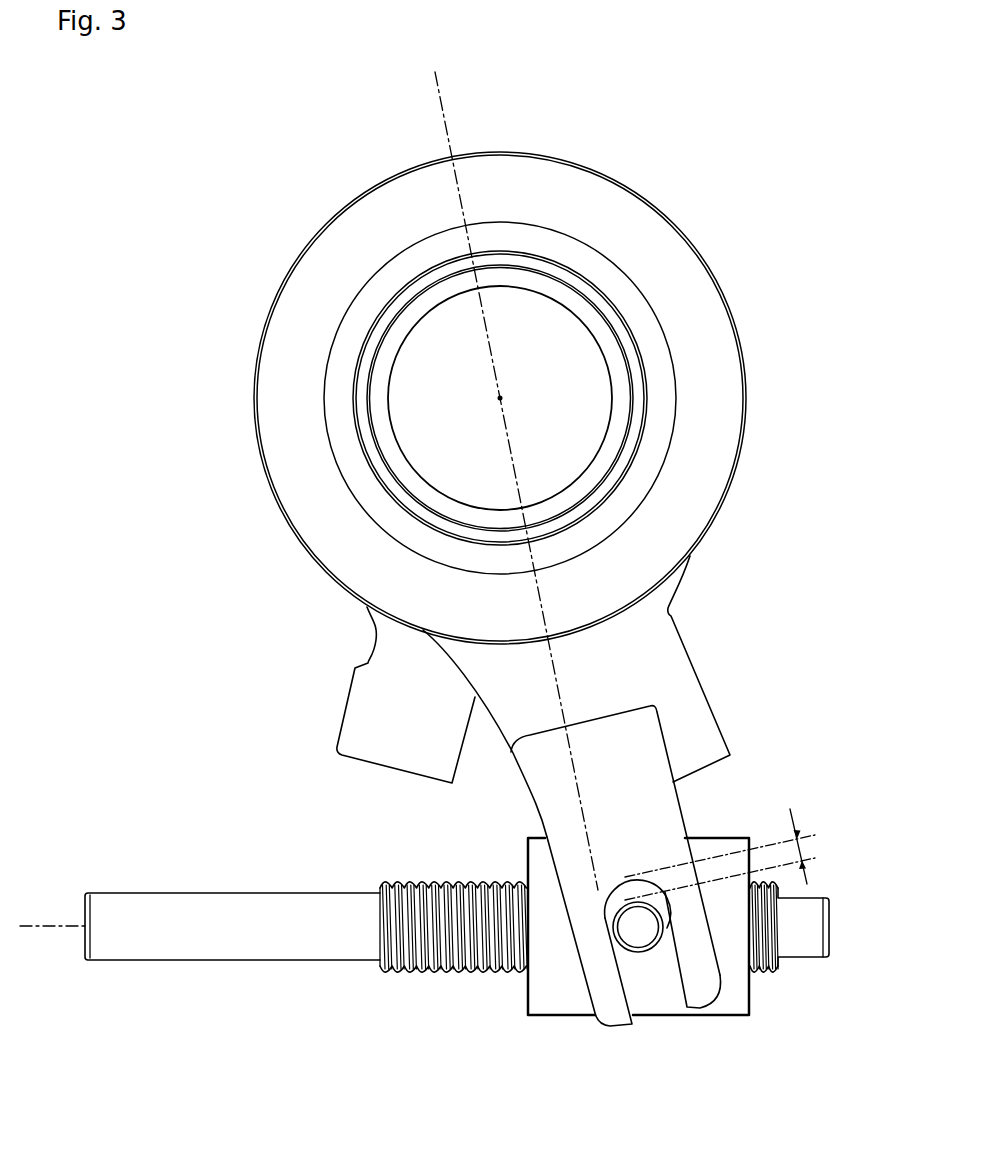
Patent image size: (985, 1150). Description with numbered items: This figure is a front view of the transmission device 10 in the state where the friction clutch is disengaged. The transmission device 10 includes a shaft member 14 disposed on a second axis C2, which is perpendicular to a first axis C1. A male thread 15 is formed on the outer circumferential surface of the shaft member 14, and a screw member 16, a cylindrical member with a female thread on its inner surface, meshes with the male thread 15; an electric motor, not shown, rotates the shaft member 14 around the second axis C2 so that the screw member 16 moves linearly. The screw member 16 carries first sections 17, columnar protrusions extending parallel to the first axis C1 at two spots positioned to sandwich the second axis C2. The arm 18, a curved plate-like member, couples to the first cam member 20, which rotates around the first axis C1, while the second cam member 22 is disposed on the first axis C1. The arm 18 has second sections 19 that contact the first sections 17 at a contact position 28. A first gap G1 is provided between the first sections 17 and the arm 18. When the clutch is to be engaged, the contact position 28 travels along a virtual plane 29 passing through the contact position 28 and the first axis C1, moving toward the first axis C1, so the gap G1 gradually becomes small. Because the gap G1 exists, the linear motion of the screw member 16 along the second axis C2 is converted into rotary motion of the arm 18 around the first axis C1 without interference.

The transmission device 10 is at (787, 125).
The shaft member 14 is at (207, 908).
The male thread 15 is at (447, 880).
The screw member 16 is at (735, 993).
The first sections 17 is at (605, 1005).
The arm 18 is at (647, 818).
The second sections 19 is at (620, 1015).
The first cam member 20 is at (298, 318).
The second cam member 22 is at (363, 712).
The contact position 28 is at (637, 933).
The virtual plane 29 is at (440, 92).
The first axis C1 is at (503, 396).
The second axis C2 is at (30, 925).
The first gap G1 is at (807, 850).